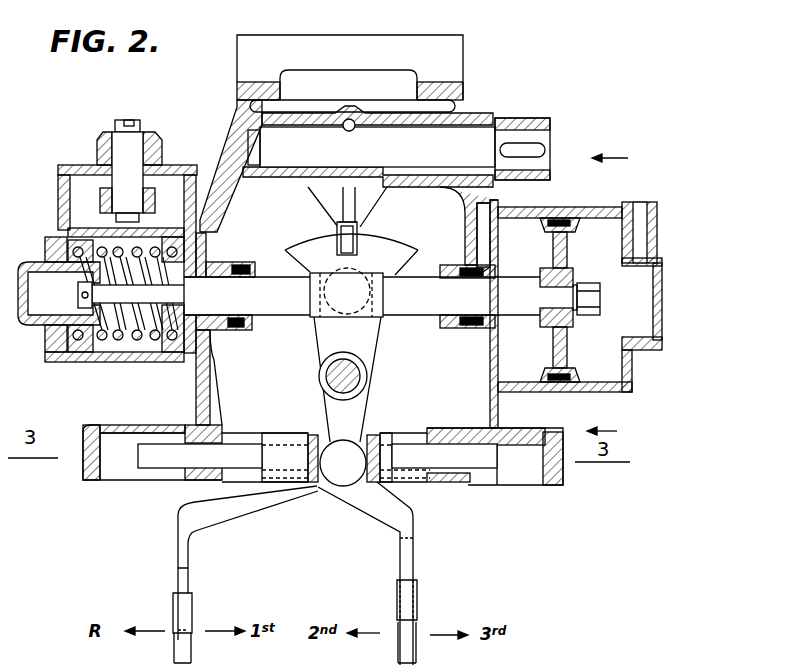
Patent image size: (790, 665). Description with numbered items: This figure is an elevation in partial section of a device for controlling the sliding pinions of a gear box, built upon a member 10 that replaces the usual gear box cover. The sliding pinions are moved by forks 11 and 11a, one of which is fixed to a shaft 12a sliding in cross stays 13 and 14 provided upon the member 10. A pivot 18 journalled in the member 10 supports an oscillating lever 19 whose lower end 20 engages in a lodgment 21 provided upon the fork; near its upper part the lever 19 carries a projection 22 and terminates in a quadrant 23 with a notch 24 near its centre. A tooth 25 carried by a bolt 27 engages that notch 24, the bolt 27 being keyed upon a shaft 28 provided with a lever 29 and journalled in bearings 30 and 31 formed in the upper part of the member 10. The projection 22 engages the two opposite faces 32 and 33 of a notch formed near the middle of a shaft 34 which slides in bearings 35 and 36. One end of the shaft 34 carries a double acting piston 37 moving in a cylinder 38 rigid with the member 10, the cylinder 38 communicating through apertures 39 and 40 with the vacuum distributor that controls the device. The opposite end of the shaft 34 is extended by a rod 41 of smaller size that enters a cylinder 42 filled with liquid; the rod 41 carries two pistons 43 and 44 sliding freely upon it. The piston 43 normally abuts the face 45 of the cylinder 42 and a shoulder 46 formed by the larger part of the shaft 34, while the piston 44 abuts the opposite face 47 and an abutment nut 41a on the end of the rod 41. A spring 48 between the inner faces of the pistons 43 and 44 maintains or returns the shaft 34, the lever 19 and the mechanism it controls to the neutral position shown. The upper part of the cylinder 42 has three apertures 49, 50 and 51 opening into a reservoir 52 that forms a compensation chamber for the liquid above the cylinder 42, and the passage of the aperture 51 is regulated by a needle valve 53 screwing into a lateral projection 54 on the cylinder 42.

The member 10 is at (555, 465).
The fork 11 is at (184, 549).
The fork 11a is at (413, 557).
The shaft 12a is at (155, 463).
The cross stay 13 is at (458, 485).
The cross stay 14 is at (197, 480).
The pivot 18 is at (362, 377).
The oscillating lever 19 is at (355, 414).
The lower end 20 is at (342, 466).
The lodgment 21 is at (377, 462).
The projection 22 is at (336, 300).
The quadrant 23 is at (385, 247).
The notch 24 is at (362, 240).
The tooth 25 is at (345, 236).
The bolt 27 is at (335, 195).
The shaft 28 is at (457, 118).
The lever 29 is at (538, 118).
The bearing 30 is at (250, 108).
The bearing 31 is at (452, 130).
The face 32 is at (316, 297).
The face 33 is at (385, 290).
The shaft 34 is at (283, 303).
The bearing 35 is at (450, 318).
The bearing 36 is at (216, 327).
The double acting piston 37 is at (560, 260).
The cylinder 38 is at (583, 228).
The aperture 39 is at (640, 215).
The aperture 40 is at (484, 204).
The rod 41 is at (133, 297).
The abutment nut 41a is at (78, 295).
The cylinder 42 is at (100, 347).
The piston 43 is at (172, 357).
The piston 44 is at (58, 357).
The face 45 is at (200, 258).
The shoulder 46 is at (200, 270).
The face 47 is at (45, 250).
The spring 48 is at (82, 220).
The aperture 49 is at (47, 236).
The aperture 50 is at (208, 207).
The aperture 51 is at (93, 198).
The reservoir 52 is at (80, 197).
The needle valve 53 is at (133, 150).
The lateral projection 54 is at (155, 200).